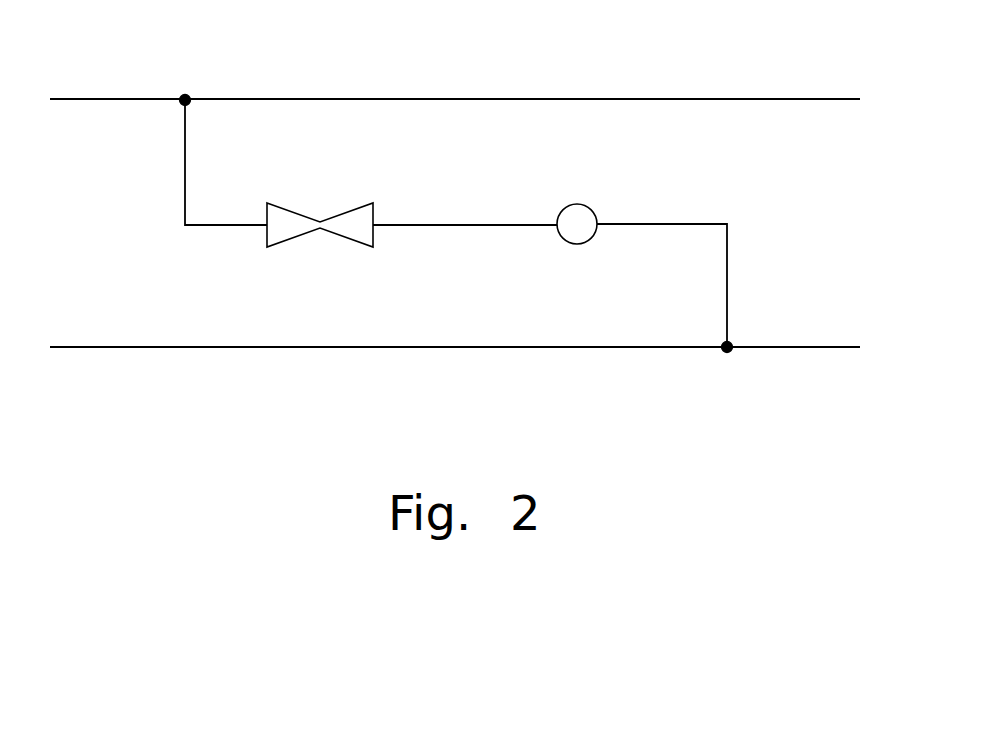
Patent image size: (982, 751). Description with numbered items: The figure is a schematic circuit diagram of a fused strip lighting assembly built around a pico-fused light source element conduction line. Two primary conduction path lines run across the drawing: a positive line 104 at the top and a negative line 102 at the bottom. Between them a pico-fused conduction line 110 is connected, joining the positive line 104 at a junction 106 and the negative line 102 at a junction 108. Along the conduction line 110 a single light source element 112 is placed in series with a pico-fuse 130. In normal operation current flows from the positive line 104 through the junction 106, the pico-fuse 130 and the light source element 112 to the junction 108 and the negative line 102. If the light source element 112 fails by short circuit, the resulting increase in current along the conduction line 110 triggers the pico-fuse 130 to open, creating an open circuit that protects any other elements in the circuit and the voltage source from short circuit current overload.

The negative line 102 is at (812, 348).
The positive line 104 is at (663, 99).
The junction 106 is at (187, 97).
The junction 108 is at (721, 351).
The pico-fused conduction line 110 is at (463, 224).
The light source element 112 is at (575, 226).
The pico-fuse 130 is at (292, 243).